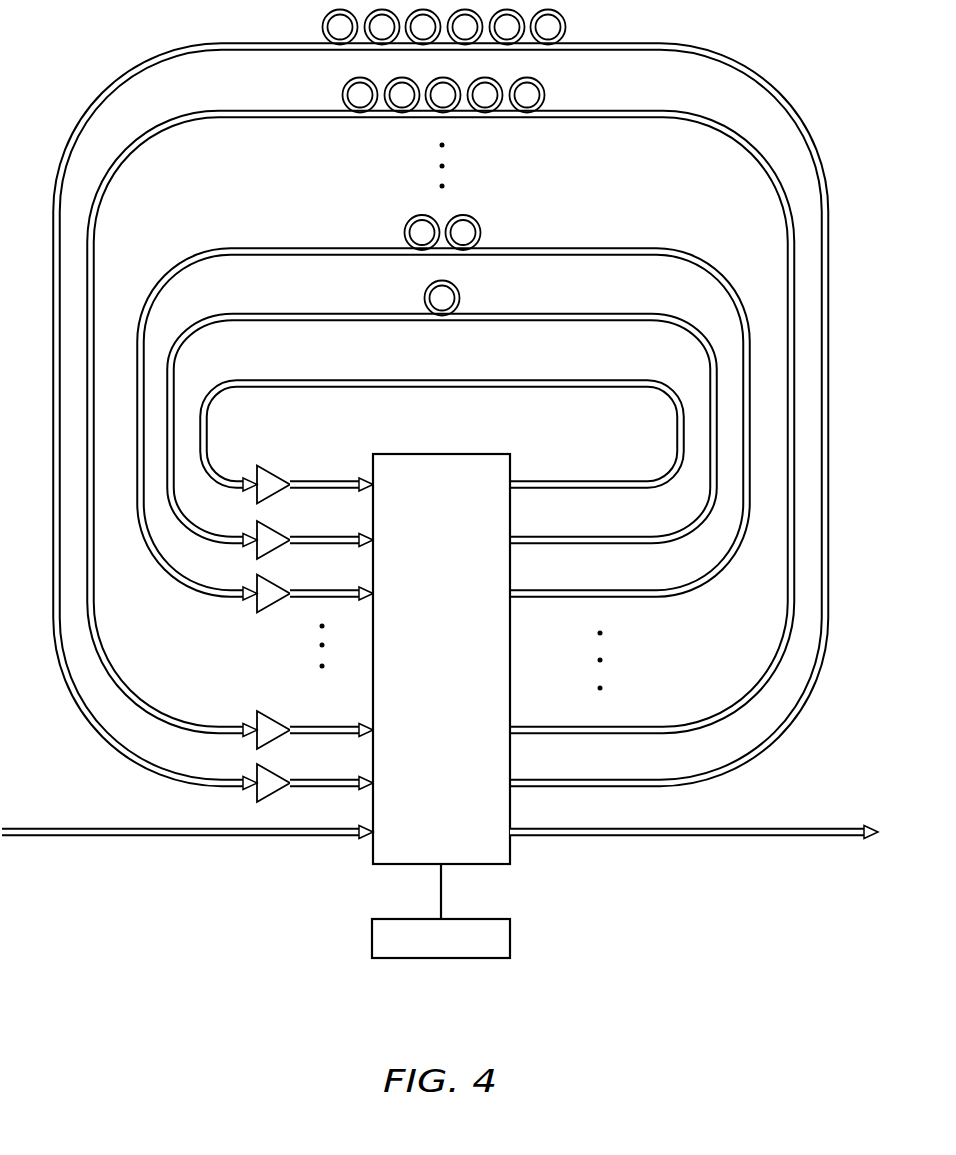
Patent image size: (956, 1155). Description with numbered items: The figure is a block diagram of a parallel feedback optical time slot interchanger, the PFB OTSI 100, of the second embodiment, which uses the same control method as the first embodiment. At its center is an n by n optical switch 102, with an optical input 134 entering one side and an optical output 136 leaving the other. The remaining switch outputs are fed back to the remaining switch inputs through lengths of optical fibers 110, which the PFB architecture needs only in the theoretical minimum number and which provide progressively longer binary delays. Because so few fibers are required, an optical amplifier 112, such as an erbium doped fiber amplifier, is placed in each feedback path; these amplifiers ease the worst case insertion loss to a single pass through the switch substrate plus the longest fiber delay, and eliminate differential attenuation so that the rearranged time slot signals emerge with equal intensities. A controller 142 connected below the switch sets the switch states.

The PFB OTSI 100 is at (440, 511).
The n x n optical switch 102 is at (462, 454).
The optical fibers 110 is at (638, 405).
The optical amplifiers 112 is at (263, 465).
The optical input 134 is at (175, 838).
The optical output 136 is at (688, 838).
The controller 142 is at (463, 917).